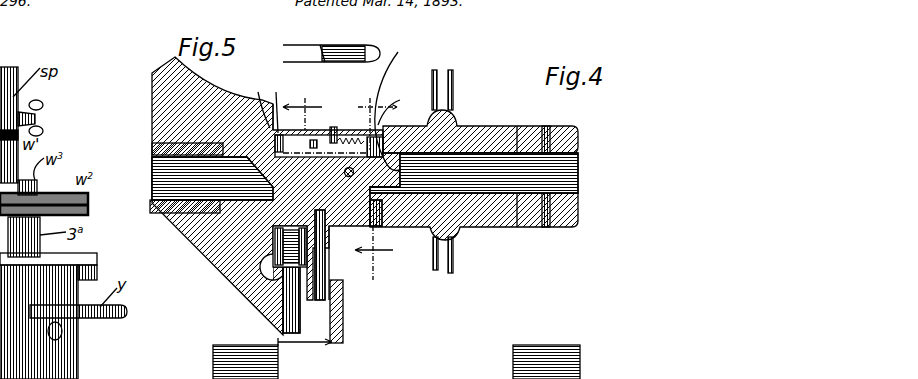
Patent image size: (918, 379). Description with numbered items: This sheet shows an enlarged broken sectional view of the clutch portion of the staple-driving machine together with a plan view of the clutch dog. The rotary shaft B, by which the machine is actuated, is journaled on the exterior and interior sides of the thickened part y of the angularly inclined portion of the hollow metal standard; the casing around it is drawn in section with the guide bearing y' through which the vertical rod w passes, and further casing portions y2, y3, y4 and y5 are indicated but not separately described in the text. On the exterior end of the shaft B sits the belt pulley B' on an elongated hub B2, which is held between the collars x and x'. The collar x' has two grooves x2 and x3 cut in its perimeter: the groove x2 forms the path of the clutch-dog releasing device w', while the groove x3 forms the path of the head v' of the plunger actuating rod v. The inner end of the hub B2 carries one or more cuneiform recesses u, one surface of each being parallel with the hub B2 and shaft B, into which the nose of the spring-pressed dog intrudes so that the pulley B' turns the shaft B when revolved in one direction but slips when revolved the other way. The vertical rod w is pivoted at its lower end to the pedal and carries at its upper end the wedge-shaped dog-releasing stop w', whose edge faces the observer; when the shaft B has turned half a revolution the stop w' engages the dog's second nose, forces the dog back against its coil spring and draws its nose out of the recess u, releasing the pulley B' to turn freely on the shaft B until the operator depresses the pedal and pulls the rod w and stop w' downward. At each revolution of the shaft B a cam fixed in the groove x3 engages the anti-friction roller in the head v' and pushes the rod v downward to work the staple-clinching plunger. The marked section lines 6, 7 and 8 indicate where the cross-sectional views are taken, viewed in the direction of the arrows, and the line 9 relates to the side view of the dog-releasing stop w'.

In FIG. 5, the thickened part y is at (276, 183).
In FIG. 5, the guide bearing y' is at (259, 102).
In FIG. 5, the casing part y2 is at (271, 105).
In FIG. 5, the pin y3 is at (358, 177).
In FIG. 5, the casing projection y4 is at (396, 113).
In FIG. 5, the latch piece y5 is at (338, 62).
In FIG. 5, the collar x is at (329, 135).
In FIG. 4, the collar x is at (592, 215).
In FIG. 5, the collar x' is at (335, 129).
In FIG. 5, the groove x2 is at (334, 127).
In FIG. 5, the groove x3 is at (302, 132).
In FIG. 5, the vertical rod w is at (371, 216).
In FIG. 5, the dog-releasing stop w' is at (336, 255).
In FIG. 5, the cuneiform recess u is at (382, 226).
In FIG. 5, the plunger actuating rod v is at (278, 300).
In FIG. 5, the head v' is at (284, 251).
In FIG. 5, the rotary shaft B is at (212, 178).
In FIG. 4, the rotary shaft B is at (474, 173).
In FIG. 5, the belt pulley B' is at (215, 334).
In FIG. 4, the belt pulley B' is at (455, 168).
In FIG. 5, the elongated hub B2 is at (213, 350).
In FIG. 4, the elongated hub B2 is at (488, 127).
In FIG. 5, the section line 6 is at (305, 107).
In FIG. 5, the section line 7 is at (374, 263).
In FIG. 5, the section line 8 is at (377, 117).
In FIG. 5, the section line 9 is at (305, 354).